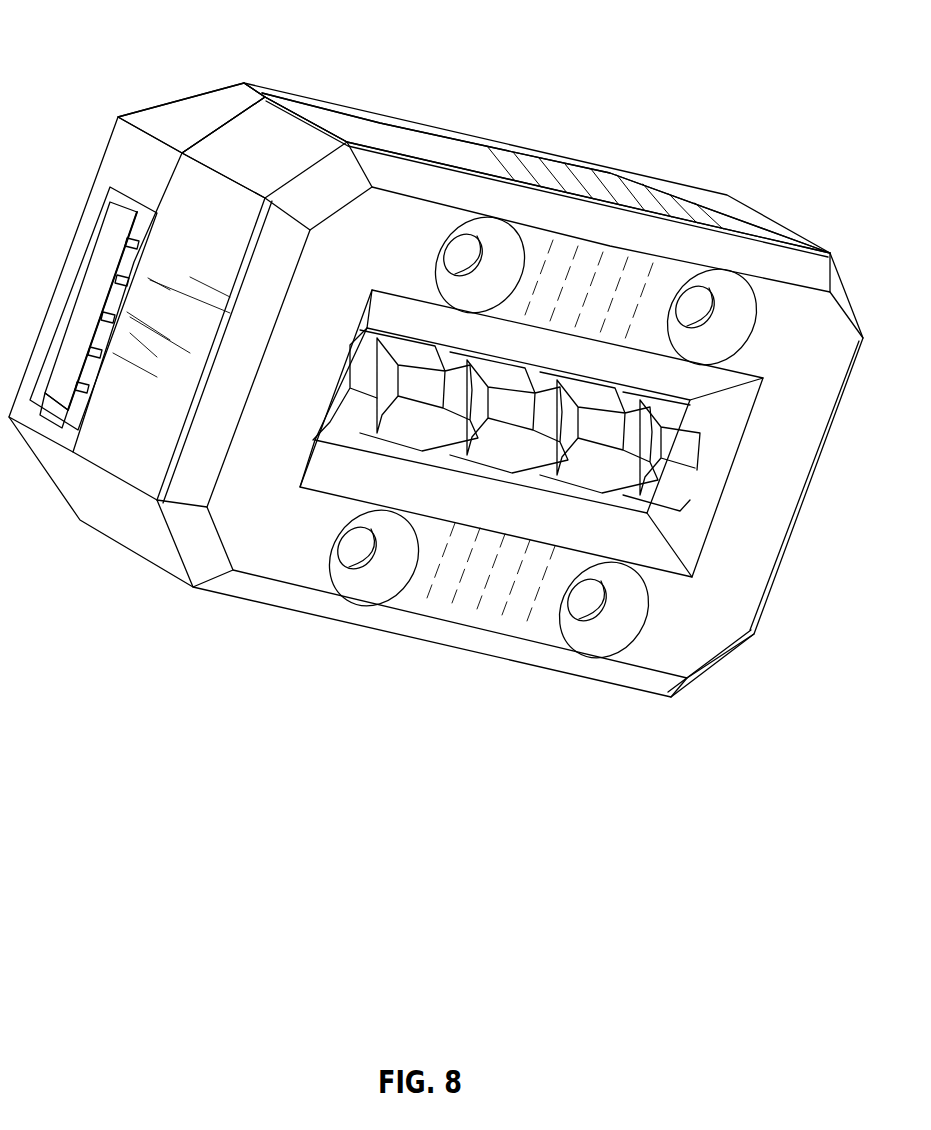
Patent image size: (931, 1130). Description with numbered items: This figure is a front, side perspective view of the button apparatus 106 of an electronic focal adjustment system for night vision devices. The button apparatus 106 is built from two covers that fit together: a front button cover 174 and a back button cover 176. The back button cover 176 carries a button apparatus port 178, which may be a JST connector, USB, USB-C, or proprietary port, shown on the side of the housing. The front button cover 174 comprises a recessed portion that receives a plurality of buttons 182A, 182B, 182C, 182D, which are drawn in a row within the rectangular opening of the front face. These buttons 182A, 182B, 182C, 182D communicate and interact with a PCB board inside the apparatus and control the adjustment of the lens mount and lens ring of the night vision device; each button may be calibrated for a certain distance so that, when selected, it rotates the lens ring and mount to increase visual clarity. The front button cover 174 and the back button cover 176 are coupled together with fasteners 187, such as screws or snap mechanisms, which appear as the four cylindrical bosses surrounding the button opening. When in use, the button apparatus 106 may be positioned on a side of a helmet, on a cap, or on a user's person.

The button apparatus 106 is at (262, 172).
The front button cover 174 is at (473, 168).
The back button cover 176 is at (176, 128).
The button apparatus port 178 is at (105, 253).
The button 182A is at (378, 400).
The button 182B is at (468, 400).
The button 182C is at (583, 430).
The button 182D is at (672, 470).
The fasteners 187 is at (698, 300).